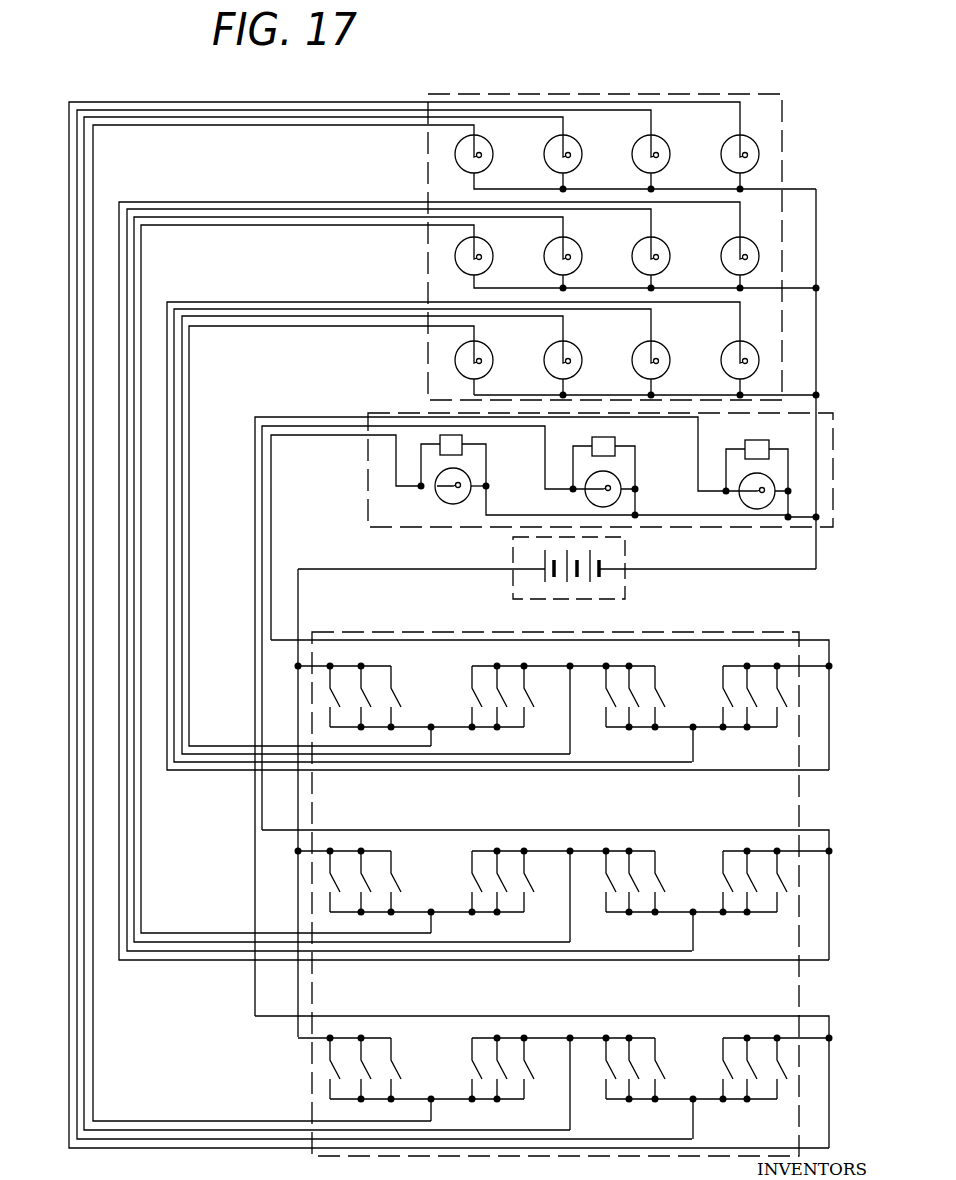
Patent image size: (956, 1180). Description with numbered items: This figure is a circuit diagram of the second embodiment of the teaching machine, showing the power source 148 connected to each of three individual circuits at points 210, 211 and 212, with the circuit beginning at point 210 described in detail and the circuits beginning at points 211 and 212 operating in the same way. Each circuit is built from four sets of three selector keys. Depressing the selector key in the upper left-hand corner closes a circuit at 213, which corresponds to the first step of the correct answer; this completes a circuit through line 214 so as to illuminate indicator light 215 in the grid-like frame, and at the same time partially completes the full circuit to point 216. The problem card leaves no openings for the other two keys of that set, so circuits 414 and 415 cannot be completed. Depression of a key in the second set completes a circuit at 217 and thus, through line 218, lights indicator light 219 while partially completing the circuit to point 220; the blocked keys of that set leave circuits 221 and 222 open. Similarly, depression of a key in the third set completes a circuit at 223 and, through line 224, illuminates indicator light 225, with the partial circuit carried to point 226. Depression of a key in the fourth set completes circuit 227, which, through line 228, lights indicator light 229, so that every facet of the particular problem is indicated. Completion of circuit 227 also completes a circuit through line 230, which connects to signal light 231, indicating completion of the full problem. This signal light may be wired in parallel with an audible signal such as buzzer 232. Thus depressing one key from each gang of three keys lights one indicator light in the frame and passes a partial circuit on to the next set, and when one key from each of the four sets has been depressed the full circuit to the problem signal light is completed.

The power source 148 is at (625, 592).
The circuit connection point 210 is at (297, 668).
The circuit connection point 211 is at (293, 853).
The circuit connection point 212 is at (297, 1038).
The circuit 213 is at (337, 700).
The line 214 is at (190, 537).
The indicator light 215 is at (455, 358).
The point 216 is at (472, 731).
The circuit 217 is at (502, 700).
The line 218 is at (222, 752).
The indicator light 219 is at (577, 345).
The point 220 is at (606, 665).
The circuit 221 is at (473, 707).
The circuit 222 is at (528, 710).
The circuit 223 is at (662, 702).
The line 224 is at (212, 758).
The indicator light 225 is at (665, 345).
The point 226 is at (723, 731).
The circuit 227 is at (782, 708).
The line 228 is at (165, 752).
The indicator light 229 is at (760, 358).
The line 230 is at (825, 647).
The signal light 231 is at (437, 495).
The buzzer 232 is at (462, 440).
The circuit 414 is at (368, 696).
The circuit 415 is at (398, 700).